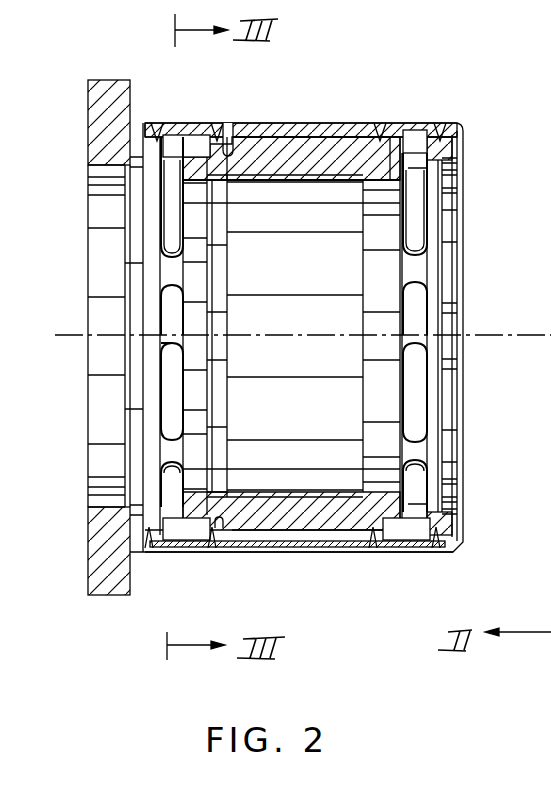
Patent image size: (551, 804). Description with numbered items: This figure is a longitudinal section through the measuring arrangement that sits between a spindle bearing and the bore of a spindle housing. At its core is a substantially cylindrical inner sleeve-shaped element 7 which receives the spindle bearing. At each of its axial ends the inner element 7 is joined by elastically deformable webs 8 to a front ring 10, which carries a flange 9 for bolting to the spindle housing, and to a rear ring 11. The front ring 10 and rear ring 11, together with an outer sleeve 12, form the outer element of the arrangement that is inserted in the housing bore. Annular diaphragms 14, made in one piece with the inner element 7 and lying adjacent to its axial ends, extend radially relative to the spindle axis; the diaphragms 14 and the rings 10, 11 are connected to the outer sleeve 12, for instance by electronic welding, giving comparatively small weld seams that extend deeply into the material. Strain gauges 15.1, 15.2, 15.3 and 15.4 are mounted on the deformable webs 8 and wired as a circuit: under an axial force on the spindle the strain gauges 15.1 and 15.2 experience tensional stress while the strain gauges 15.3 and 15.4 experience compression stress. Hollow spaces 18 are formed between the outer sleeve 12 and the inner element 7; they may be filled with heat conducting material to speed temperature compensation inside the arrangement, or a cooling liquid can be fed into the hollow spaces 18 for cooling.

The inner sleeve-shaped element 7 is at (316, 150).
The elastically deformable webs 8 is at (177, 153).
The flange 9 is at (104, 80).
The front ring 10 is at (145, 122).
The rear ring 11 is at (464, 142).
The outer sleeve 12 is at (281, 122).
The annular diaphragms 14 is at (244, 124).
The strain gauge 15.1 is at (172, 163).
The strain gauge 15.2 is at (163, 497).
The strain gauge 15.3 is at (412, 190).
The strain gauge 15.4 is at (420, 493).
The hollow spaces 18 is at (187, 533).